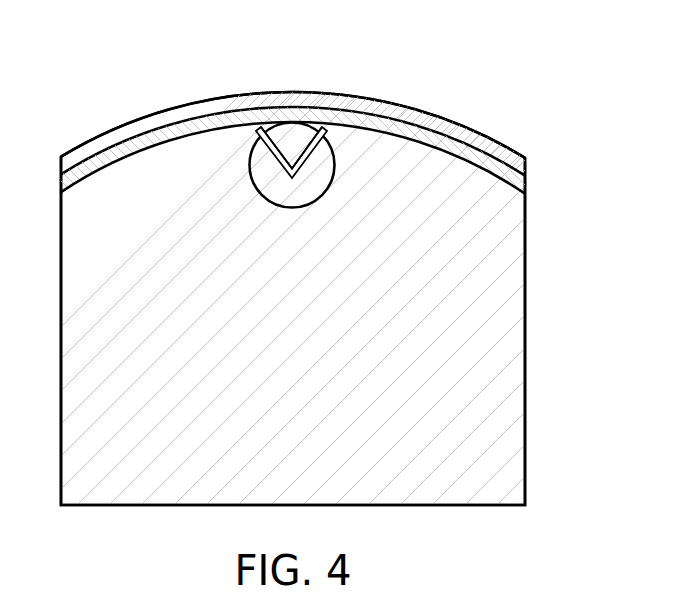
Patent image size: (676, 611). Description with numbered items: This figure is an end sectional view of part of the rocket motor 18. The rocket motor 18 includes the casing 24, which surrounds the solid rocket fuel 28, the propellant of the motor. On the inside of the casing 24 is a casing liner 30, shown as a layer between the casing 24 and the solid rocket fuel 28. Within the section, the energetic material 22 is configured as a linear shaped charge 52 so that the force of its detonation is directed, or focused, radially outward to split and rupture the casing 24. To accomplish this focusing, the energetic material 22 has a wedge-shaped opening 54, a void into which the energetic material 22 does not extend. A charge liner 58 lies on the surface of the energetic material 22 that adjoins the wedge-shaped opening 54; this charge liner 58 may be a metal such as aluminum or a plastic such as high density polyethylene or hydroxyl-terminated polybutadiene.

The rocket motor 18 is at (522, 122).
The energetic material 22 is at (327, 177).
The casing 24 is at (417, 107).
The solid rocket fuel 28 is at (505, 302).
The casing liner 30 is at (458, 135).
The linear shaped charge 52 is at (238, 133).
The wedge-shaped opening 54 is at (298, 140).
The charge liner 58 is at (280, 142).